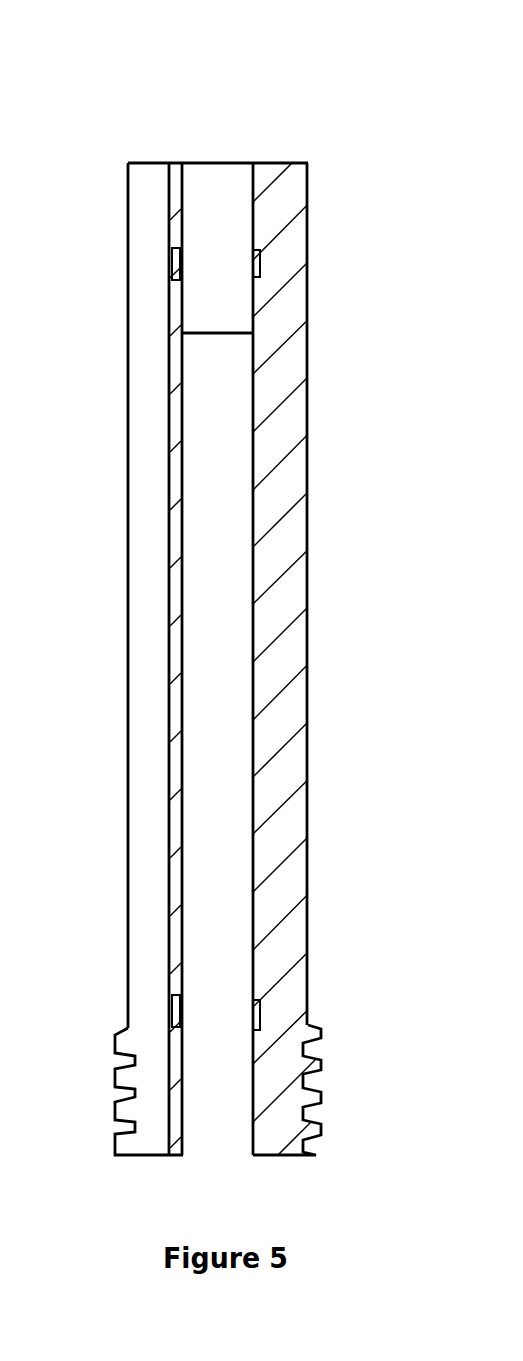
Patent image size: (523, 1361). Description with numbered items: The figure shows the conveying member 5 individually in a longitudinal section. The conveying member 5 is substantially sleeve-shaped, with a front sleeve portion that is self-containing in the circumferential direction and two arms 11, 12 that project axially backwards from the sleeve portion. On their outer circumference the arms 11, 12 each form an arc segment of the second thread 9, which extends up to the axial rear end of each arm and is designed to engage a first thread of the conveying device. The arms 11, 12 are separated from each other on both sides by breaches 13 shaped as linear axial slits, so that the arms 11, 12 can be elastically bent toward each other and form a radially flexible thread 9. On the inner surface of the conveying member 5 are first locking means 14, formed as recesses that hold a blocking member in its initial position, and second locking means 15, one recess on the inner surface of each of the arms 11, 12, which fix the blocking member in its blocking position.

The conveying member 5 is at (325, 628).
The second thread 9 is at (322, 1127).
The arm 11 is at (142, 767).
The arm 12 is at (277, 776).
The breach 13 is at (207, 426).
The first locking means 14 is at (183, 278).
The second locking means 15 is at (183, 1022).